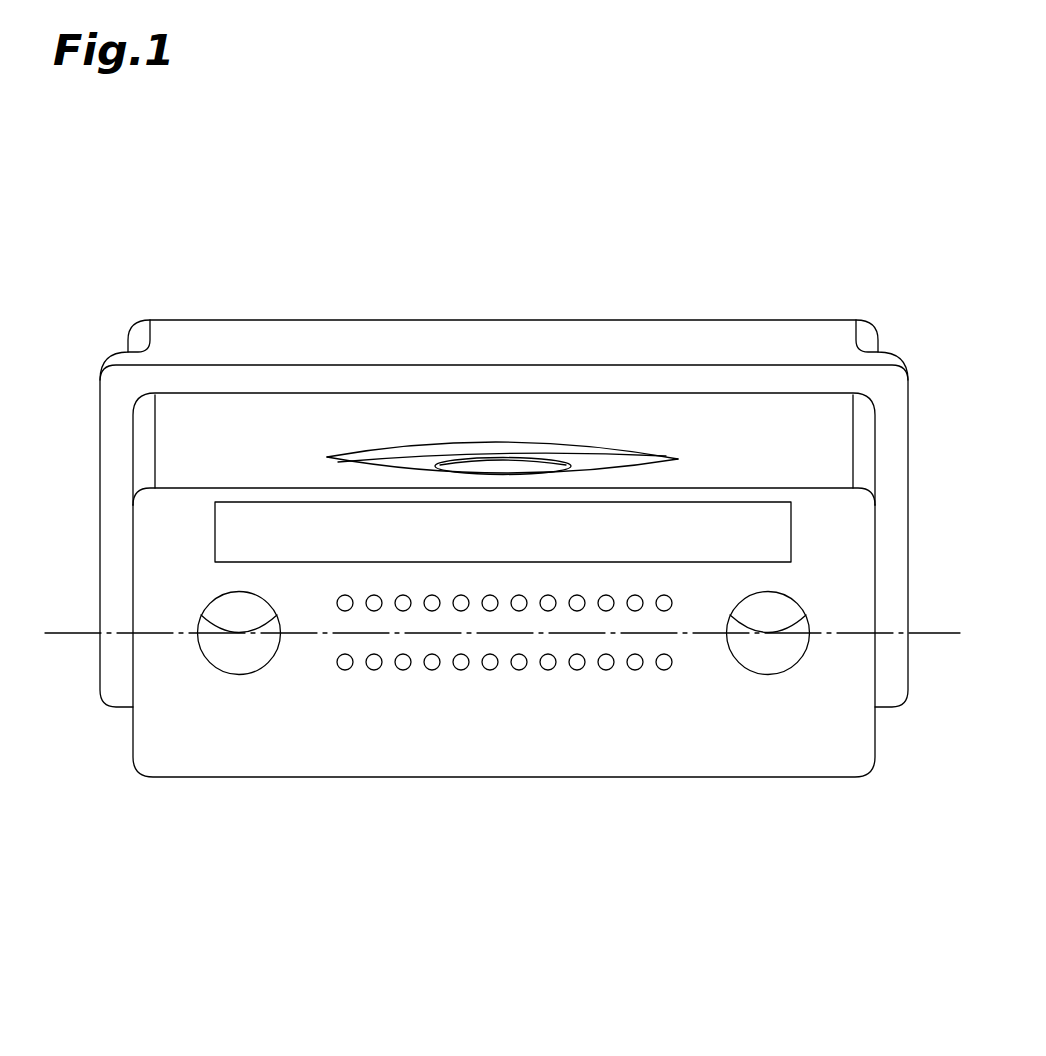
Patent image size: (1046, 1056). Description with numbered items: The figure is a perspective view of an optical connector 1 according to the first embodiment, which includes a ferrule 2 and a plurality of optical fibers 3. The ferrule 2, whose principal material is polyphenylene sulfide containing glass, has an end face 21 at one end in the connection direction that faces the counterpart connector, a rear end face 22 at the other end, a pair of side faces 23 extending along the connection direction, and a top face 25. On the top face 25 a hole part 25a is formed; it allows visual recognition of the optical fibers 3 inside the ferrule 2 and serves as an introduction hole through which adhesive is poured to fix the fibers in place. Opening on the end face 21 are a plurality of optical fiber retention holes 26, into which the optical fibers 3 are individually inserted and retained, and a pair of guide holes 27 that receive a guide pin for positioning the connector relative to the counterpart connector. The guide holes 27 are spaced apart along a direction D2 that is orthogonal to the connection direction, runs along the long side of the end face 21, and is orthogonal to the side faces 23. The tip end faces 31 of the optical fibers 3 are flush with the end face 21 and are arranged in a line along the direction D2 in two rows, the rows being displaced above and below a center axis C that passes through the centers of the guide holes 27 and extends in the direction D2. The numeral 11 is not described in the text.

The optical connector 1 is at (812, 175).
The ferrule 2 is at (498, 483).
The rear end face 22 is at (438, 318).
The side faces 23 is at (130, 462).
The top face 25 is at (722, 418).
The hole part 25a is at (502, 458).
The end face 21 is at (697, 658).
The mating opening 11 is at (228, 530).
The guide holes 27 is at (200, 645).
The optical fiber retention holes 26 is at (489, 611).
The optical fiber 3 is at (487, 711).
The tip end face 31 is at (504, 711).
The center axis C is at (935, 635).
The direction D2 is at (765, 883).